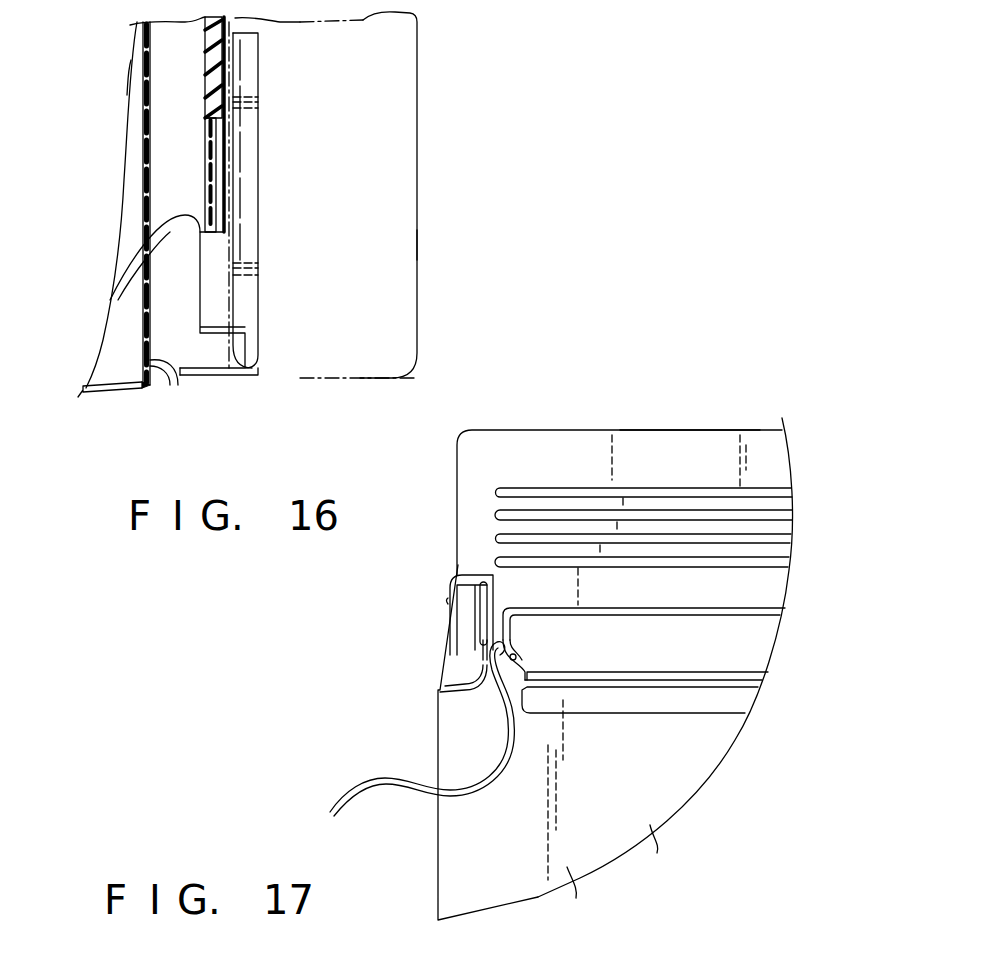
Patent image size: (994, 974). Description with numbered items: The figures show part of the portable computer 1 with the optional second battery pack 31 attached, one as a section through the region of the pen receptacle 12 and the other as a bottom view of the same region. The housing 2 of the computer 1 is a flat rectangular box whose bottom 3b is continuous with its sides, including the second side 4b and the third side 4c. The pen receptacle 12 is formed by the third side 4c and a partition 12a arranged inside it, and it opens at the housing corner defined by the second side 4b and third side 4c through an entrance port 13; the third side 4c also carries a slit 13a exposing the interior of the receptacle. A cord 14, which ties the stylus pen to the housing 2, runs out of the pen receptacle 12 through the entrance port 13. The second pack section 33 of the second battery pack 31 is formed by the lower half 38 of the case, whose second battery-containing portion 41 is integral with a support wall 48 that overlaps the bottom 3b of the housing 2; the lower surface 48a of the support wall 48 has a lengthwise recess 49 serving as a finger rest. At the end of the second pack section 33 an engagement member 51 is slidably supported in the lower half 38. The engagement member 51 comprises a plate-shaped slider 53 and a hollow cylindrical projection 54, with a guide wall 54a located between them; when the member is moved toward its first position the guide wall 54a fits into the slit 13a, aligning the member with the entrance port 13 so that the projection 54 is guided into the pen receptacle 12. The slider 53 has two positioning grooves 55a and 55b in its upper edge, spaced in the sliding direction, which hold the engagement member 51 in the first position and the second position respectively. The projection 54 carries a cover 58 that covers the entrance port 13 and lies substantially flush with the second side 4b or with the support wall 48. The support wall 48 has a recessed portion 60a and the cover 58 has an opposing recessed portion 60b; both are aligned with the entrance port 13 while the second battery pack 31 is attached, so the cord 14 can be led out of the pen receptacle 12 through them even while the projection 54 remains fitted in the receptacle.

In FIG. 17, the portable computer 1 is at (433, 881).
In FIG. 16, the housing 2 is at (91, 393).
In FIG. 17, the housing 2 is at (578, 897).
In FIG. 17, the bottom 3b is at (663, 856).
In FIG. 17, the second side 4b is at (437, 745).
In FIG. 16, the third side 4c is at (222, 74).
In FIG. 16, the pen receptacle 12 is at (172, 150).
In FIG. 16, the partition 12a is at (140, 70).
In FIG. 16, the entrance port 13 is at (176, 375).
In FIG. 17, the entrance port 13 is at (478, 680).
In FIG. 16, the slit 13a is at (143, 278).
In FIG. 17, the cord 14 is at (490, 765).
In FIG. 16, the second battery pack 31 is at (404, 135).
In FIG. 17, the second battery pack 31 is at (766, 463).
In FIG. 16, the second pack section 33 is at (398, 282).
In FIG. 17, the lower half 38 is at (652, 448).
In FIG. 17, the second battery-containing portion 41 is at (780, 527).
In FIG. 17, the support wall 48 is at (750, 697).
In FIG. 17, the lower surface 48a is at (631, 700).
In FIG. 17, the recess 49 is at (733, 618).
In FIG. 16, the engagement member 51 is at (257, 225).
In FIG. 17, the engagement member 51 is at (450, 613).
In FIG. 16, the slider 53 is at (247, 170).
In FIG. 16, the projection 54 is at (165, 297).
In FIG. 16, the guide wall 54a is at (212, 292).
In FIG. 16, the positioning groove 55a is at (250, 268).
In FIG. 16, the positioning groove 55b is at (253, 104).
In FIG. 16, the cover 58 is at (225, 373).
In FIG. 17, the cover 58 is at (470, 631).
In FIG. 17, the recessed portion 60a is at (516, 662).
In FIG. 17, the recessed portion 60b is at (485, 695).